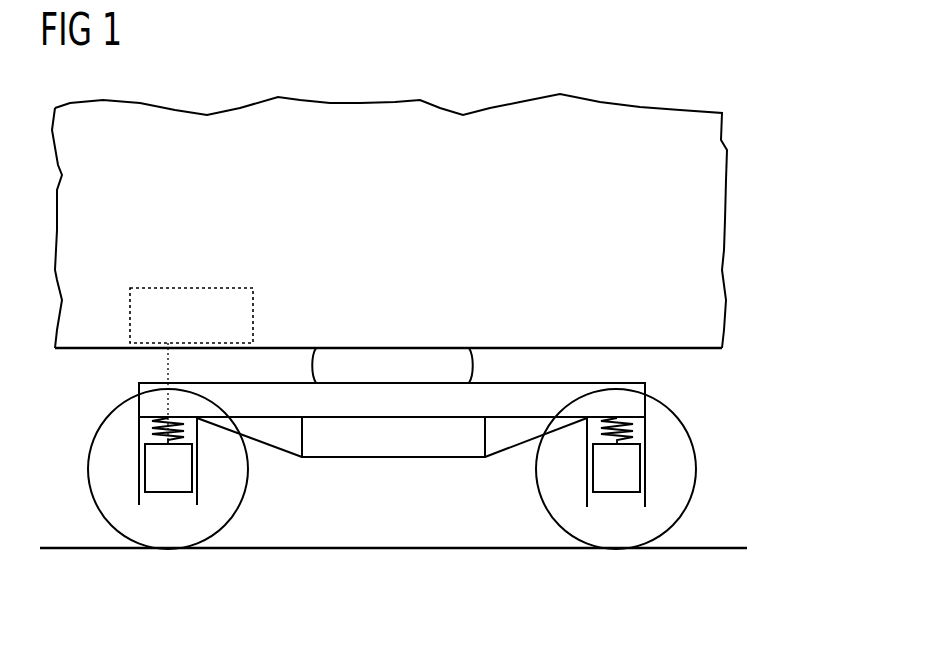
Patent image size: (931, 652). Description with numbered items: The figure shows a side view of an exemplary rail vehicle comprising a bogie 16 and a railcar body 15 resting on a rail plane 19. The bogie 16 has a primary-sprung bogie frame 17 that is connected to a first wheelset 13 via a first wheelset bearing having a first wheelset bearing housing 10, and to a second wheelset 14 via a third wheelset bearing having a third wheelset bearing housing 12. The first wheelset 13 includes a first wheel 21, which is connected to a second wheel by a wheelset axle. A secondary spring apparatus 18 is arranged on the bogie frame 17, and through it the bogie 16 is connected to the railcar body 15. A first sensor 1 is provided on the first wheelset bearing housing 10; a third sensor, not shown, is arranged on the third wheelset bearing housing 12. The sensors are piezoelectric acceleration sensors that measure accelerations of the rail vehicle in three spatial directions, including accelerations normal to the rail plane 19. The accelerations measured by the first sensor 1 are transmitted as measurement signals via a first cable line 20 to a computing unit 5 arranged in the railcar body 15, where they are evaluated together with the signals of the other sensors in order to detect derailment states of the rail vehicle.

The first sensor 1 is at (151, 440).
The computing unit 5 is at (250, 313).
The first wheelset bearing housing 10 is at (150, 468).
The third wheelset bearing housing 12 is at (634, 464).
The first wheelset 13 is at (168, 503).
The second wheelset 14 is at (615, 550).
The railcar body 15 is at (720, 327).
The bogie 16 is at (648, 503).
The bogie frame 17 is at (644, 392).
The secondary spring apparatus 18 is at (472, 366).
The rail plane 19 is at (393, 550).
The first cable line 20 is at (170, 368).
The first wheel 21 is at (166, 552).